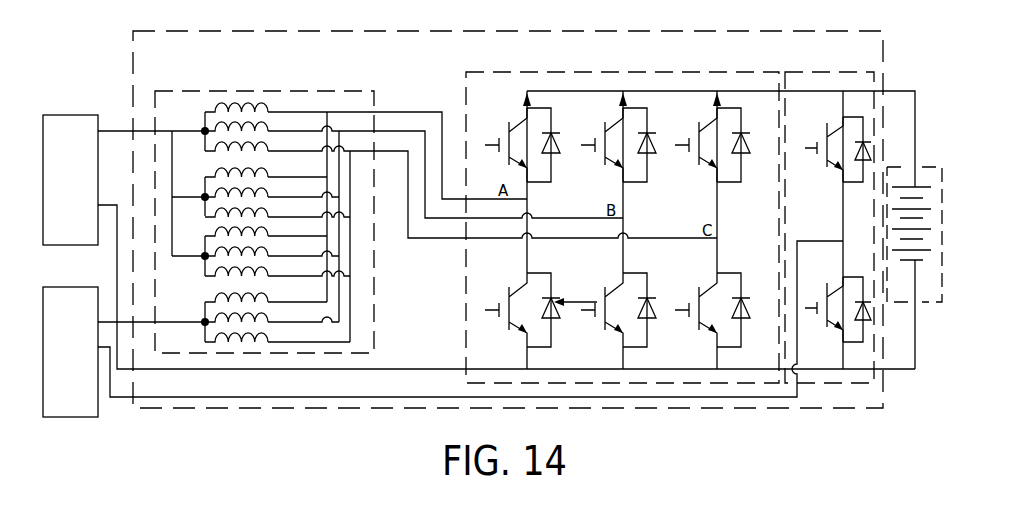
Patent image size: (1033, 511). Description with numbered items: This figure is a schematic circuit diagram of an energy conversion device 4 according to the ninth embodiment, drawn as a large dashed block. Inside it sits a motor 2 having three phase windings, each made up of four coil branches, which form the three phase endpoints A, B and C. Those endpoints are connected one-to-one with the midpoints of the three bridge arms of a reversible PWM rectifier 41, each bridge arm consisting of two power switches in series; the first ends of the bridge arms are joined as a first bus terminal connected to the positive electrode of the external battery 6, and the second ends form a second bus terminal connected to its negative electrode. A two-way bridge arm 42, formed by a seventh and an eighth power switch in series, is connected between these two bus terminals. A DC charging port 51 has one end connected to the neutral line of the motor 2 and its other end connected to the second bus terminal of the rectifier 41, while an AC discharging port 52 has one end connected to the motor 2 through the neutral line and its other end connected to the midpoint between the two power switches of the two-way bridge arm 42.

The motor 2 is at (273, 91).
The energy conversion device 4 is at (505, 31).
The reversible PWM rectifier 41 is at (611, 72).
The two-way bridge arm 42 is at (822, 72).
The DC charging port 51 is at (57, 115).
The AC discharging port 52 is at (60, 287).
The battery 6 is at (918, 167).